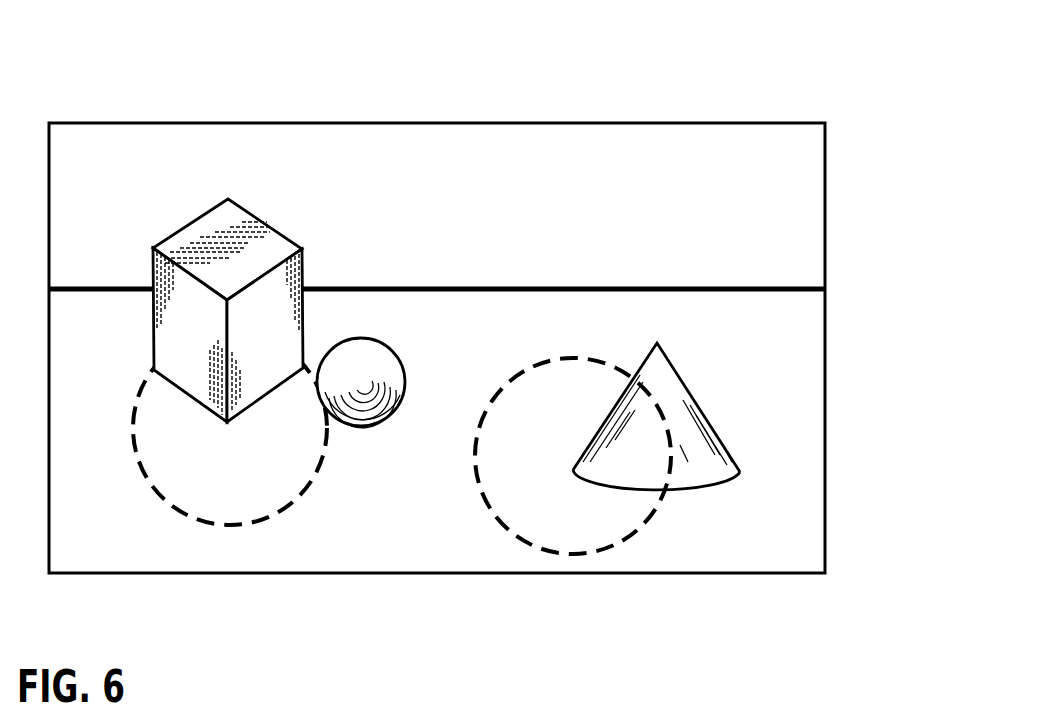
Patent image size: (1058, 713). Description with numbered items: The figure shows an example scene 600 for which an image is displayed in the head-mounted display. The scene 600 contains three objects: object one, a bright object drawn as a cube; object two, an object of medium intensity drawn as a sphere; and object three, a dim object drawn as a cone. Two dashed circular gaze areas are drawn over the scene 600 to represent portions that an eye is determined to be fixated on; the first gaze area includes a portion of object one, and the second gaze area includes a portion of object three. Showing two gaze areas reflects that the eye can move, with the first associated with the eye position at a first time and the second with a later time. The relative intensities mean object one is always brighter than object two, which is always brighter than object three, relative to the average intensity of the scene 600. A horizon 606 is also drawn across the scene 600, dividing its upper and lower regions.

The scene 600 is at (842, 188).
The horizon 606 is at (108, 290).